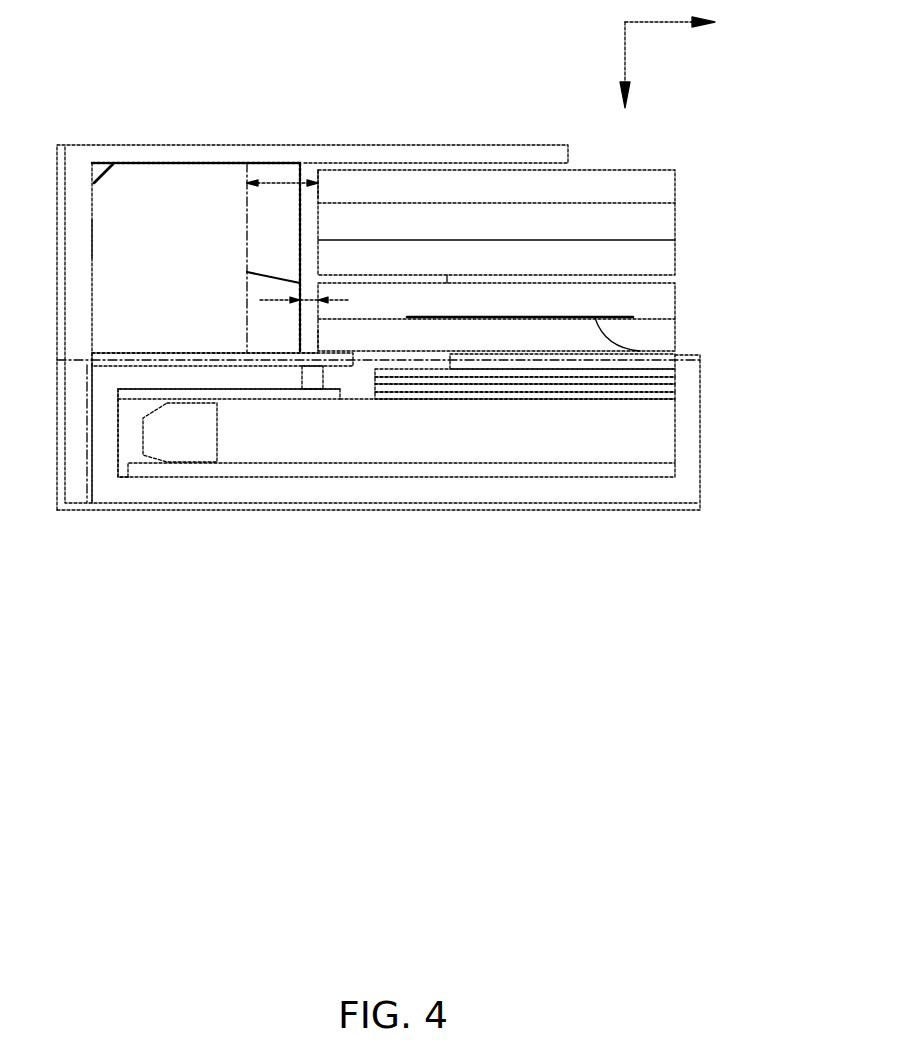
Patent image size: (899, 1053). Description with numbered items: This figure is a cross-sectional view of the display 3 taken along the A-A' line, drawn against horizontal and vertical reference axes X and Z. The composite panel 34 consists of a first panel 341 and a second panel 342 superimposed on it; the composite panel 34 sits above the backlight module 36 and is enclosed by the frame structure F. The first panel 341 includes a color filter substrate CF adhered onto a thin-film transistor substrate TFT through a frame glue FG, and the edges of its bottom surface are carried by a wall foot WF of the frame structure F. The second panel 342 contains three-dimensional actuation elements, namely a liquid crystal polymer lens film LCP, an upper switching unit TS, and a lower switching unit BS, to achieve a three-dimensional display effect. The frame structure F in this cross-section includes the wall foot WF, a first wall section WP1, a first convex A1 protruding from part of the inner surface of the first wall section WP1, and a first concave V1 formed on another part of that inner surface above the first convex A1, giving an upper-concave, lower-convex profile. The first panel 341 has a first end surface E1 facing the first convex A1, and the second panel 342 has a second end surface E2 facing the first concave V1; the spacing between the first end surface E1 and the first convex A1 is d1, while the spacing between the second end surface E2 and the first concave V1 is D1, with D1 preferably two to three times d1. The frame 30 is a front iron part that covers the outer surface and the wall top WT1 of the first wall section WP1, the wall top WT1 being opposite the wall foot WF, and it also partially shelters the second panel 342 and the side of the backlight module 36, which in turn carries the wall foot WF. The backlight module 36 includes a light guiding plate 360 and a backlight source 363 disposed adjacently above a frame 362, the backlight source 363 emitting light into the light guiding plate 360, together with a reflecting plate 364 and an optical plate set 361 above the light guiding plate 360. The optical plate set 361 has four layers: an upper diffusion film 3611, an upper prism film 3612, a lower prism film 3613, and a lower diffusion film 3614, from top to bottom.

The display 3 is at (63, 65).
The frame 30 is at (77, 198).
The composite panel 34 is at (738, 220).
The first panel 341 is at (683, 283).
The second panel 342 is at (683, 172).
The backlight module 36 is at (702, 492).
The light guiding plate 360 is at (477, 447).
The optical plate set 361 is at (787, 388).
The upper diffusion film 3611 is at (675, 373).
The upper prism film 3612 is at (675, 380).
The lower prism film 3613 is at (675, 388).
The lower diffusion film 3614 is at (675, 395).
The frame 362 is at (125, 440).
The backlight source 363 is at (185, 450).
The reflecting plate 364 is at (150, 393).
The wall top WT1 is at (142, 162).
The first wall section WP1 is at (192, 276).
The first concave V1 is at (288, 238).
The first convex A1 is at (286, 343).
The distance D1 is at (278, 183).
The distance d1 is at (305, 300).
The first end surface E1 is at (318, 342).
The second end surface E2 is at (318, 171).
The frame structure F is at (90, 240).
The wall foot WF is at (92, 357).
The frame glue FG is at (700, 355).
The liquid crystal polymer lens film LCP is at (523, 200).
The upper switching unit TS is at (517, 235).
The lower switching unit BS is at (517, 271).
The color filter substrate CF is at (517, 311).
The thin-film transistor substrate TFT is at (523, 348).
The X axis X is at (681, 17).
The Z axis Z is at (623, 82).